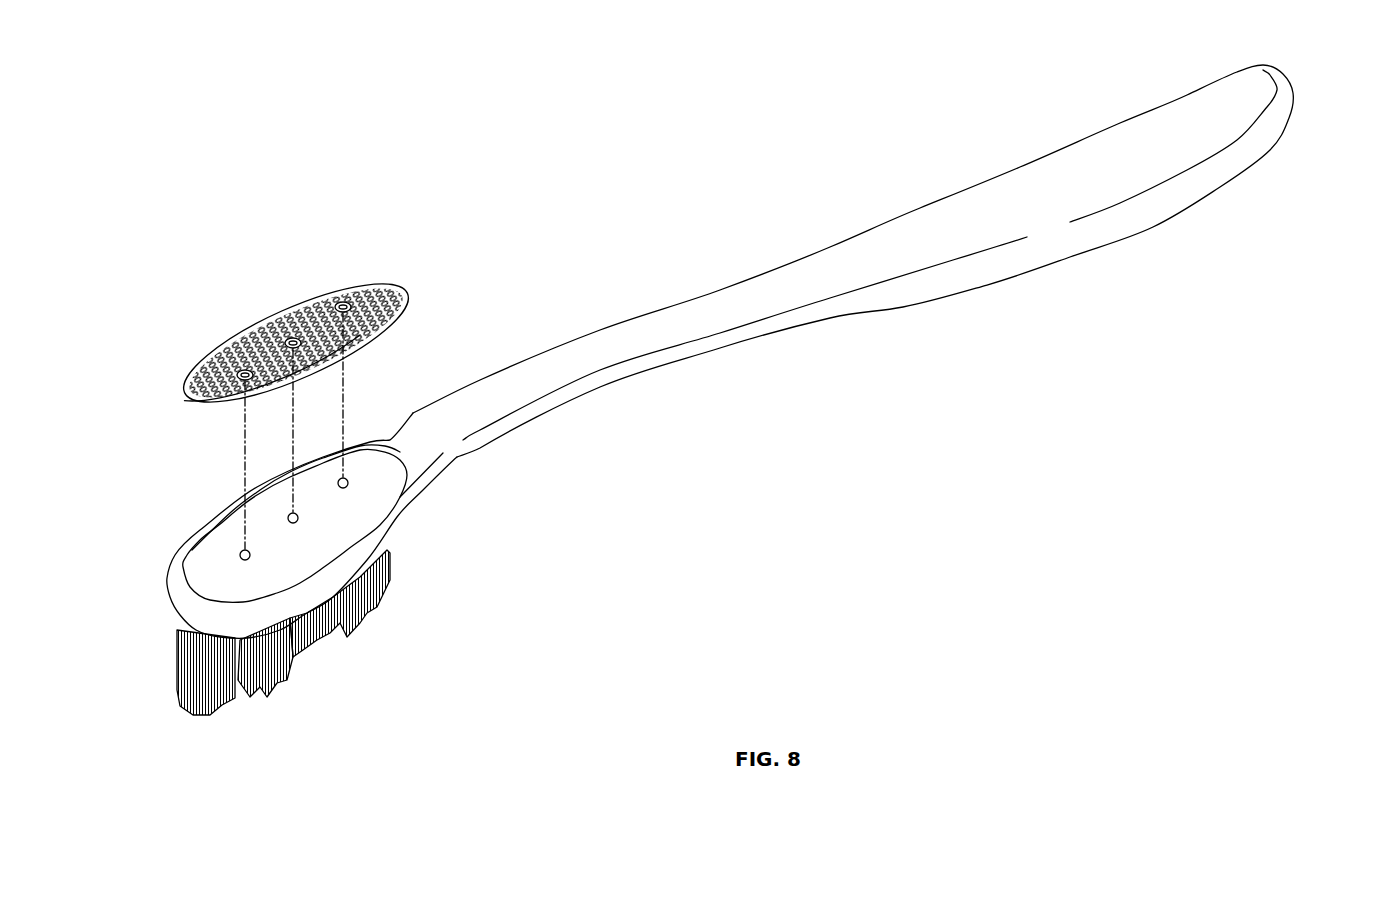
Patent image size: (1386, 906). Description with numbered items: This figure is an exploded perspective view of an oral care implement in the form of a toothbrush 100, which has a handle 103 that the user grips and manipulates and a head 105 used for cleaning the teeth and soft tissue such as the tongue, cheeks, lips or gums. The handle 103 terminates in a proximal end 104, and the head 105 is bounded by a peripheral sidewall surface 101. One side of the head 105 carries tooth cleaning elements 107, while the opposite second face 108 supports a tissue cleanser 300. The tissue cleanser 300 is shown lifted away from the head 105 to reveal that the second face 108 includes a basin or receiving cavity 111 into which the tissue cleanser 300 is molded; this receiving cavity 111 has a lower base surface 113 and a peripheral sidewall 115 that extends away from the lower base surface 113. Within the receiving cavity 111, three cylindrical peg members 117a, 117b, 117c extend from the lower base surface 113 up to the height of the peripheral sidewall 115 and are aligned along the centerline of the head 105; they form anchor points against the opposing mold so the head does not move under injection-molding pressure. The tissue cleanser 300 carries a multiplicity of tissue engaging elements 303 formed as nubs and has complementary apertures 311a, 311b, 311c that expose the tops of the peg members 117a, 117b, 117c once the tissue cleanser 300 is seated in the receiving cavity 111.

The toothbrush 100 is at (246, 180).
The peripheral sidewall surface 101 is at (172, 605).
The handle 103 is at (1020, 167).
The proximal end 104 is at (1291, 84).
The head 105 is at (410, 573).
The tooth cleaning elements 107 is at (317, 682).
The second face 108 is at (410, 430).
The receiving cavity 111 is at (366, 446).
The lower base surface 113 is at (207, 556).
The peripheral sidewall 115 is at (233, 511).
The peg member 117a is at (250, 557).
The peg member 117b is at (298, 522).
The peg member 117c is at (348, 485).
The tissue cleanser 300 is at (410, 287).
The tissue engaging elements 303 is at (378, 268).
The aperture 311a is at (226, 346).
The aperture 311b is at (272, 318).
The aperture 311c is at (323, 282).